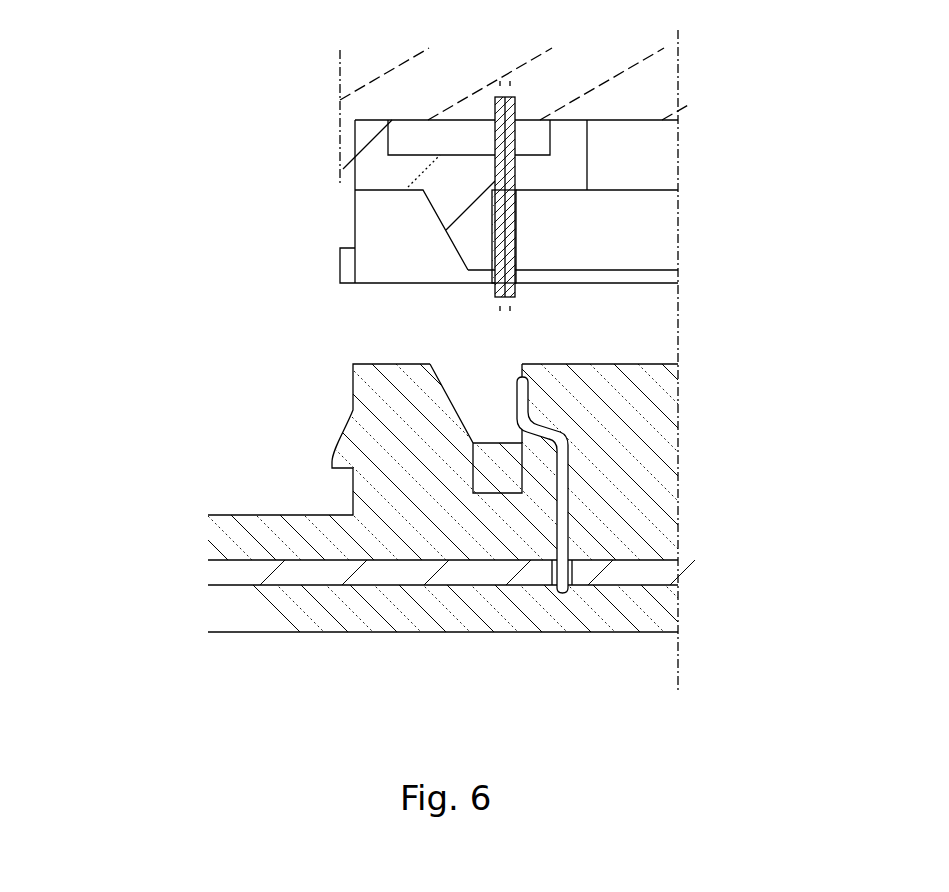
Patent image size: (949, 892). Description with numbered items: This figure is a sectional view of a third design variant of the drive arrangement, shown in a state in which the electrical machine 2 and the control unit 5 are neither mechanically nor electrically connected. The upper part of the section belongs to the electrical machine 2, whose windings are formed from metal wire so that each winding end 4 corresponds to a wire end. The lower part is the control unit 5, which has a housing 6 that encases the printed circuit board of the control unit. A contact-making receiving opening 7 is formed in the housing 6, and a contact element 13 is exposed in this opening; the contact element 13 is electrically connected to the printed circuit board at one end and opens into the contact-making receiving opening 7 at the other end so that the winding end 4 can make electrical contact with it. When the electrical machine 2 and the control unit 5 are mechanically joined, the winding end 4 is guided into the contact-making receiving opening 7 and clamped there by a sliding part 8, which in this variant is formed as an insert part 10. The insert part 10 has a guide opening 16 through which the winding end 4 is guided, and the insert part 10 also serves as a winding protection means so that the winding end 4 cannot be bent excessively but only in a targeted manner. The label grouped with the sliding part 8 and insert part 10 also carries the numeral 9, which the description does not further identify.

The electrical machine 2 is at (312, 118).
The winding end 4 is at (505, 245).
The control unit 5 is at (720, 448).
The housing 6 is at (585, 392).
The contact-making receiving opening 7 is at (483, 405).
The sliding part 8 is at (395, 170).
The second layer 9 is at (395, 170).
The insert part 10 is at (395, 170).
The contact element 13 is at (560, 545).
The guide opening 16 is at (515, 170).